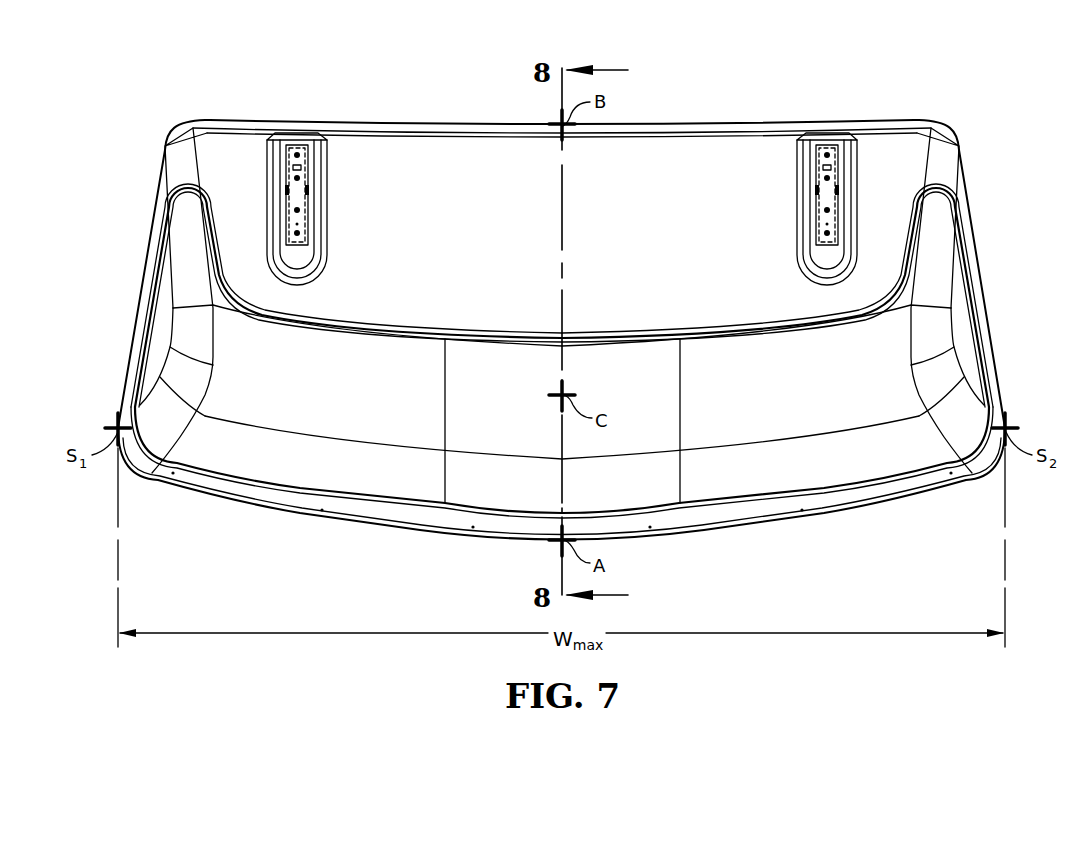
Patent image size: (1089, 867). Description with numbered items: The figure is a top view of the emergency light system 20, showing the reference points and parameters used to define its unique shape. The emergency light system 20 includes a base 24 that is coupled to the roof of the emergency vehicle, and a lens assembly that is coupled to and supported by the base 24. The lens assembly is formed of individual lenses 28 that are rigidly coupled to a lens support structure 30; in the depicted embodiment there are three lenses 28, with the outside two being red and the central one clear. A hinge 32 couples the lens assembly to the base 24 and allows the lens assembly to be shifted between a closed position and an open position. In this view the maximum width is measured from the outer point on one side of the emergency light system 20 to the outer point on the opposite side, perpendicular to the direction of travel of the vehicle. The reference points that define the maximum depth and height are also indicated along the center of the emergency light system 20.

The emergency light system 20 is at (1010, 127).
The base 24 is at (135, 341).
The lenses 28 is at (358, 432).
The lens support structure 30 is at (972, 281).
The hinge 32 is at (288, 168).